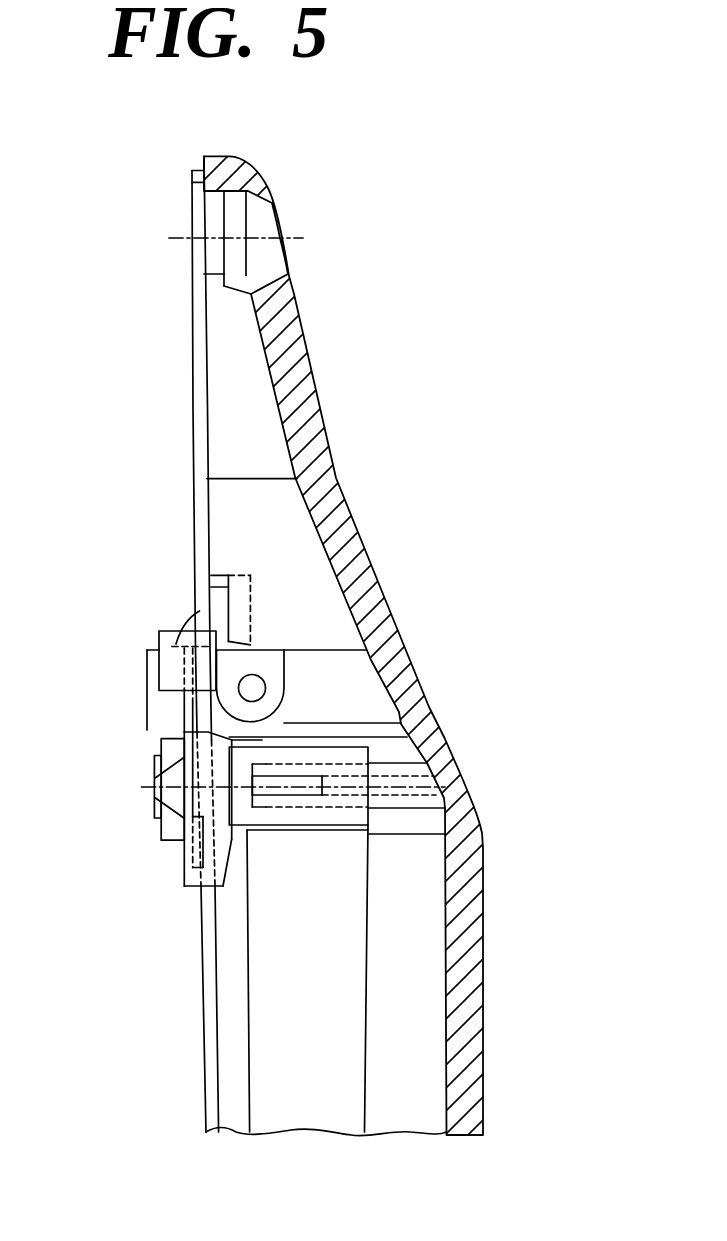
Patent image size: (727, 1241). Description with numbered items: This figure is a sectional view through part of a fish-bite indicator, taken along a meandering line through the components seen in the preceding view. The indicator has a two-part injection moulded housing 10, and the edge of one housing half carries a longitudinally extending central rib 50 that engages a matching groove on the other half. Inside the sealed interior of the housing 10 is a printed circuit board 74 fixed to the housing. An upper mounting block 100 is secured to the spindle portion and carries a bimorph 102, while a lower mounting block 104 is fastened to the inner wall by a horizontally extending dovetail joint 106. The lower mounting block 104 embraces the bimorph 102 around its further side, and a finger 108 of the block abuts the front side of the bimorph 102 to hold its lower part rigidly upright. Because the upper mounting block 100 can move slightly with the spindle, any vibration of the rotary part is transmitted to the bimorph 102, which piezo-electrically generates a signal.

The housing 10 is at (430, 705).
The central rib 50 is at (200, 437).
The printed circuit board 74 is at (326, 986).
The upper mounting block 100 is at (243, 650).
The bimorph 102 is at (176, 706).
The lower mounting block 104 is at (323, 805).
The dovetail joint 106 is at (271, 757).
The finger 108 is at (146, 790).